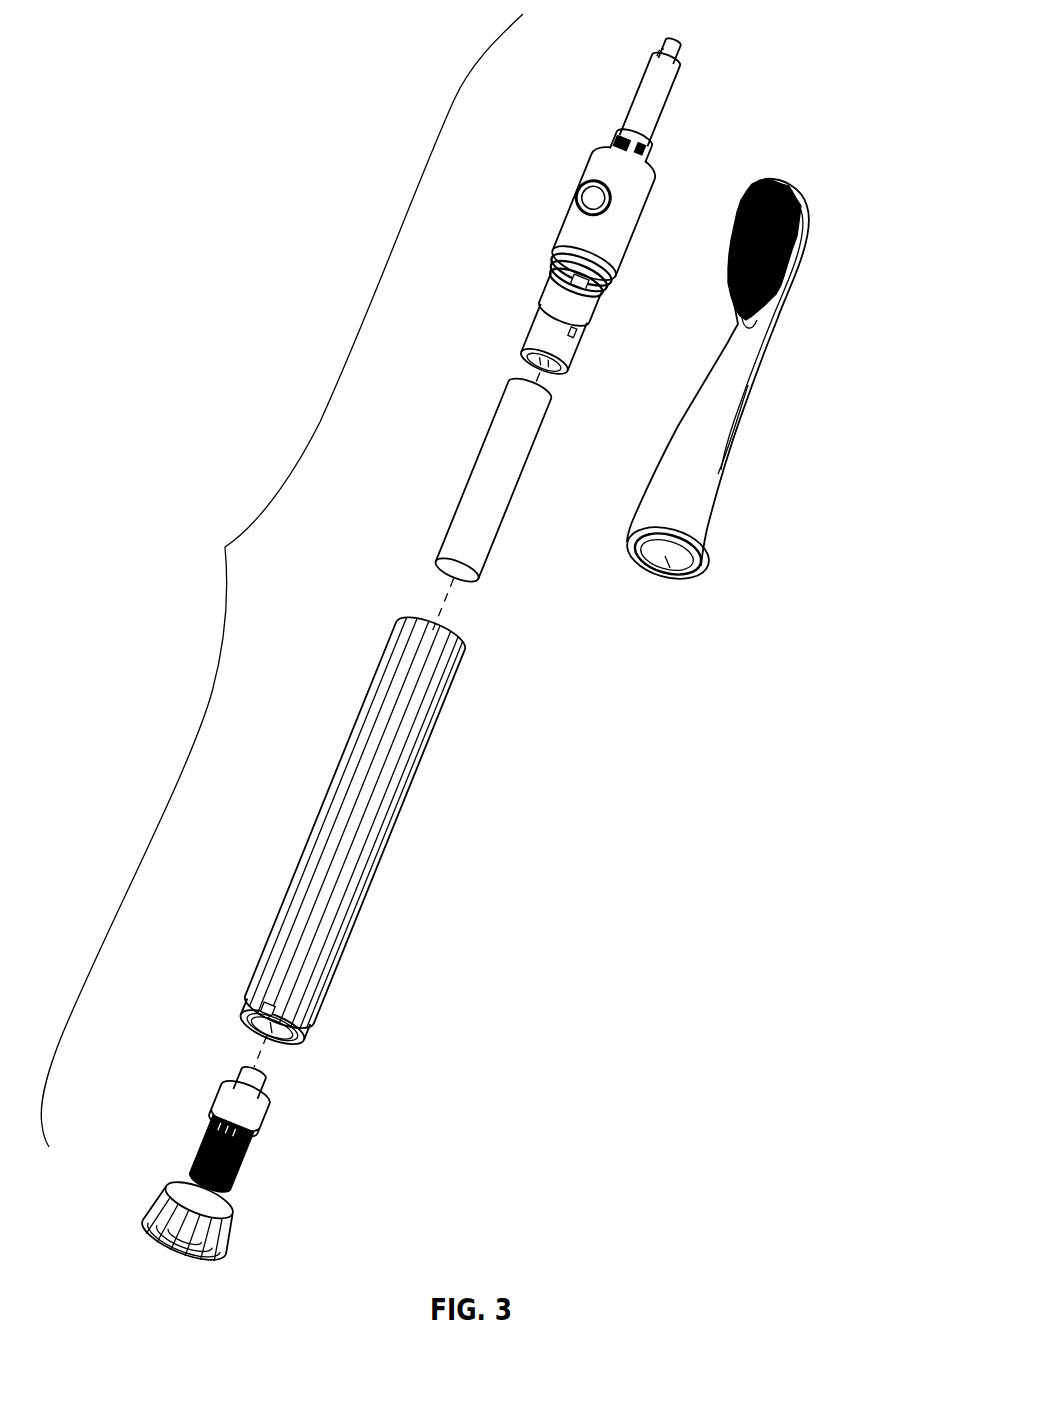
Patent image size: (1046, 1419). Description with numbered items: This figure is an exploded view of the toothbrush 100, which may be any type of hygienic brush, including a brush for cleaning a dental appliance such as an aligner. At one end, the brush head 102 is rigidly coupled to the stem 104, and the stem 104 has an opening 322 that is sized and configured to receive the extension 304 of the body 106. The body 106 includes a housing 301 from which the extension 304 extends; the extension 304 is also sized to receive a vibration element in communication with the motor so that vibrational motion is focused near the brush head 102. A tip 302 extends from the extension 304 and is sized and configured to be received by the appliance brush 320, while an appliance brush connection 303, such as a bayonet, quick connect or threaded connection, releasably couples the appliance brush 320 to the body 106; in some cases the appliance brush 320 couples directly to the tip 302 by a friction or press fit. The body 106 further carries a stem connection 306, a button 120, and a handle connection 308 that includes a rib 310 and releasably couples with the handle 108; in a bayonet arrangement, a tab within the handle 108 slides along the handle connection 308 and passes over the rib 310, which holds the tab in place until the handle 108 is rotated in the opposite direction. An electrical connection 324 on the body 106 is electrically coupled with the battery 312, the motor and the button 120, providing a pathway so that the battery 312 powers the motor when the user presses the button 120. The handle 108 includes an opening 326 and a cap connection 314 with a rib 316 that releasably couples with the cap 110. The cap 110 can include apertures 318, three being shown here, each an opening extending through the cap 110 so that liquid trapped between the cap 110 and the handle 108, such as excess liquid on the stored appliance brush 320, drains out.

The toothbrush 100 is at (282, 580).
The brush head 102 is at (803, 186).
The stem 104 is at (752, 388).
The body 106 is at (616, 230).
The handle 108 is at (320, 845).
The cap 110 is at (160, 1223).
The button 120 is at (586, 200).
The housing 301 is at (596, 166).
The tip 302 is at (686, 38).
The appliance brush connection 303 is at (662, 47).
The extension 304 is at (659, 100).
The stem connection 306 is at (647, 156).
The handle connection 308 is at (556, 270).
The rib 310 is at (585, 281).
The battery 312 is at (478, 478).
The cap connection 314 is at (249, 1011).
The rib 316 is at (270, 1003).
The aperture 318 is at (168, 1242).
The appliance brush 320 is at (280, 1113).
The opening 322 is at (666, 570).
The electrical connection 324 is at (550, 372).
The opening 326 is at (291, 1033).